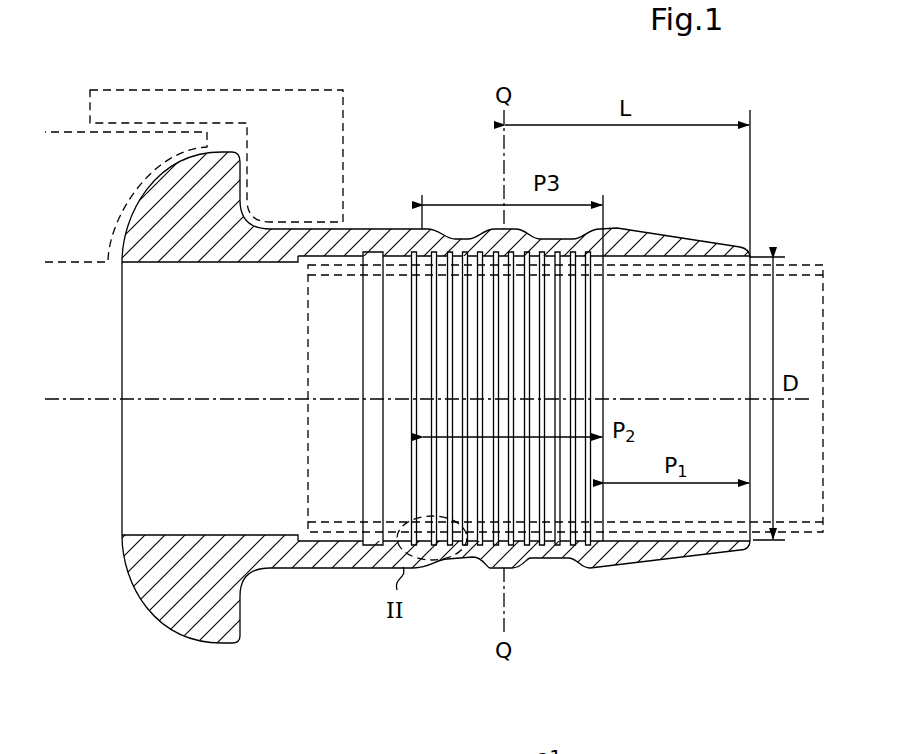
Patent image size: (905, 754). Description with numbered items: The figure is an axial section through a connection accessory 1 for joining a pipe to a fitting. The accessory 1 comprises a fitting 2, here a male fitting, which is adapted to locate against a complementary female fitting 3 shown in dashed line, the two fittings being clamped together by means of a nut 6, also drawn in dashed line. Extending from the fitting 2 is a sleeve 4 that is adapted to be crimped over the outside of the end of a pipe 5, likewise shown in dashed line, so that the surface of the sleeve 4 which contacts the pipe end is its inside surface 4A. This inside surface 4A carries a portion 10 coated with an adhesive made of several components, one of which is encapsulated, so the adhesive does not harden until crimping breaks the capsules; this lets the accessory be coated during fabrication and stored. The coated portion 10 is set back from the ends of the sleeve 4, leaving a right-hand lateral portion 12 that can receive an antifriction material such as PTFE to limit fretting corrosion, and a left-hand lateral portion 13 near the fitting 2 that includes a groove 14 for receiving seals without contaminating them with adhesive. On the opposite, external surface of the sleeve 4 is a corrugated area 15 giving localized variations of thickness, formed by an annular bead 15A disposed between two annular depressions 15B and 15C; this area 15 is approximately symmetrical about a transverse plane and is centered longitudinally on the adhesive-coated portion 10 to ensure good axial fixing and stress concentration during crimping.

The connection accessory 1 is at (427, 438).
The fitting 2 is at (208, 648).
The complementary fitting 3 is at (118, 248).
The sleeve 4 is at (378, 224).
The inside surface of the sleeve 4A is at (661, 524).
The pipe 5 is at (810, 252).
The nut 6 is at (310, 100).
The portion coated with adhesive 10 is at (546, 420).
The right-hand lateral portion 12 is at (688, 258).
The left-hand lateral portion 13 is at (298, 512).
The groove 14 is at (387, 258).
The corrugated area 15 is at (487, 224).
The annular bead 15A is at (503, 567).
The annular depression 15B is at (458, 558).
The annular depression 15C is at (558, 558).